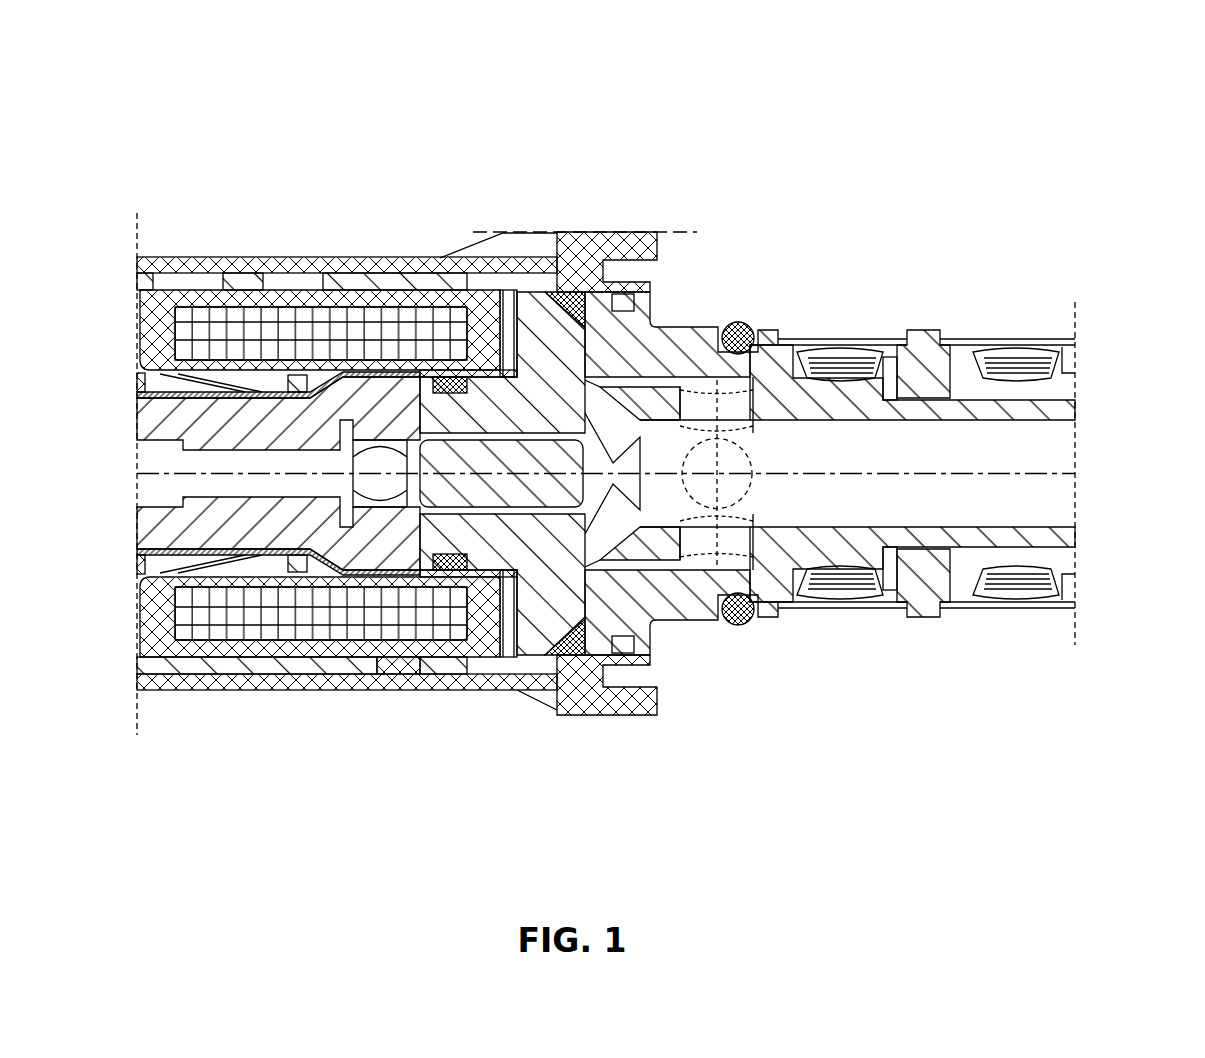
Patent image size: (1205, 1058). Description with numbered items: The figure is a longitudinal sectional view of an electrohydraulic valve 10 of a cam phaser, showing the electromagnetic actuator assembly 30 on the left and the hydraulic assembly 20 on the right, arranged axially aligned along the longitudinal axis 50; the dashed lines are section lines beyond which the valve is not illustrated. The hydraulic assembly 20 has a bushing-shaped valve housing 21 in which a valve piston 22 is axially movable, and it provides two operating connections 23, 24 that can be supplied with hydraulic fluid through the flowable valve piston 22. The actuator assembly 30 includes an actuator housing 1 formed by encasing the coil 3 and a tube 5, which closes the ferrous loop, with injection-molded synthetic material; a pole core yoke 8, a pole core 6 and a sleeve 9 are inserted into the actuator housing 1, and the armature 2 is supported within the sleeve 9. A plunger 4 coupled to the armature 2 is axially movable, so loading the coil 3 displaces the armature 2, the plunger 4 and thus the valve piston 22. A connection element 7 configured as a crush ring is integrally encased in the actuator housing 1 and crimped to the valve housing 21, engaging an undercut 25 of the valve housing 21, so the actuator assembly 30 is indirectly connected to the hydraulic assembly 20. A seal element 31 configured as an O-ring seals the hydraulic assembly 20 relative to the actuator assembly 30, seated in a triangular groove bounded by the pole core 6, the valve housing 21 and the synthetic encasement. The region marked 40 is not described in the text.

The actuator housing 1 is at (370, 263).
The armature 2 is at (260, 415).
The coil 3 is at (302, 337).
The plunger 4 is at (480, 455).
The tube 5 is at (333, 283).
The pole core 6 is at (538, 318).
The connection element 7 is at (630, 643).
The pole core yoke 8 is at (137, 383).
The sleeve 9 is at (137, 392).
The electrohydraulic valve 10 is at (621, 133).
The hydraulic assembly 20 is at (845, 724).
The valve housing 21 is at (683, 335).
The valve piston 22 is at (810, 395).
The operating connection 23 is at (857, 347).
The operating connection 24 is at (1010, 347).
The undercut 25 is at (627, 650).
The electromagnetic actuator assembly 30 is at (360, 768).
The seal element 31 is at (583, 650).
The interface 40 is at (742, 722).
The longitudinal axis 50 is at (1163, 474).